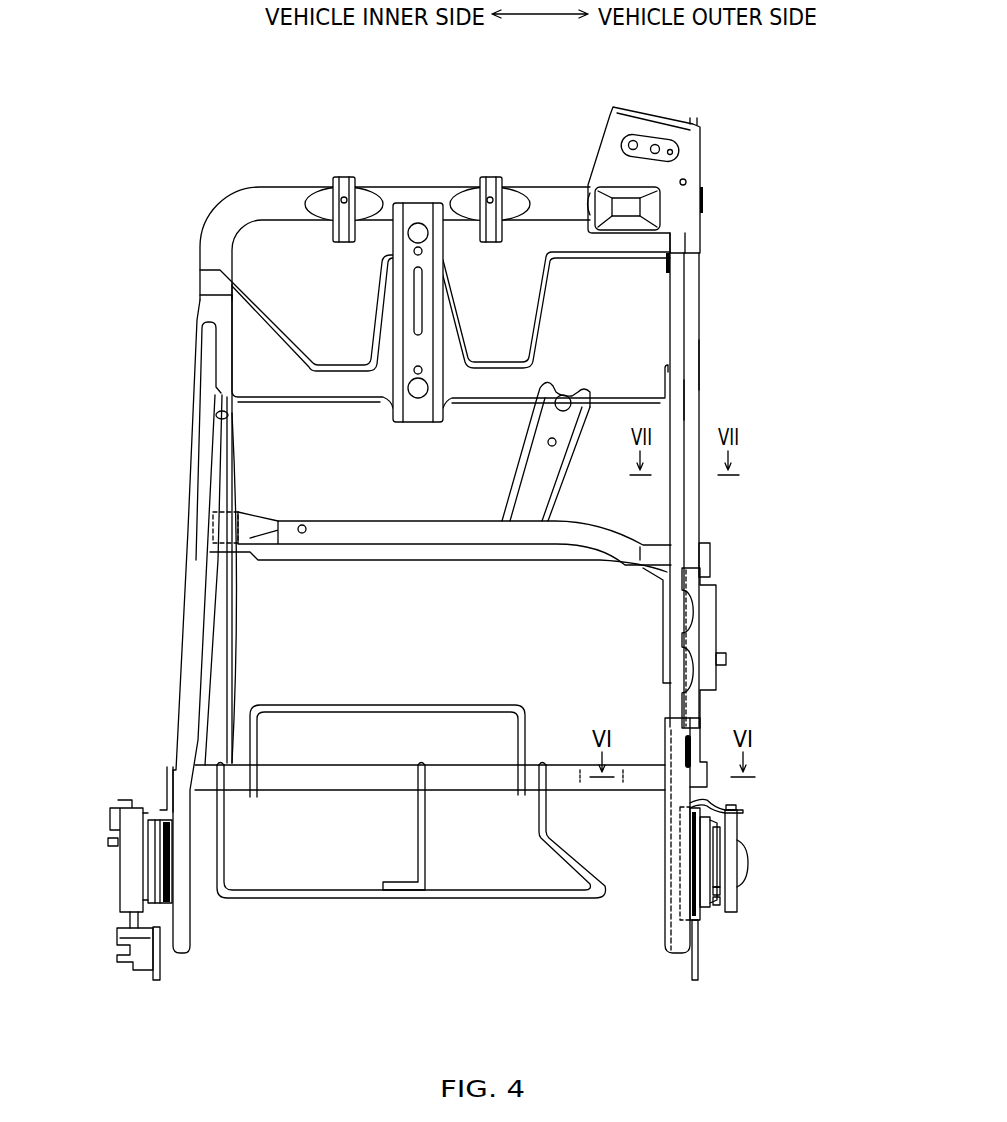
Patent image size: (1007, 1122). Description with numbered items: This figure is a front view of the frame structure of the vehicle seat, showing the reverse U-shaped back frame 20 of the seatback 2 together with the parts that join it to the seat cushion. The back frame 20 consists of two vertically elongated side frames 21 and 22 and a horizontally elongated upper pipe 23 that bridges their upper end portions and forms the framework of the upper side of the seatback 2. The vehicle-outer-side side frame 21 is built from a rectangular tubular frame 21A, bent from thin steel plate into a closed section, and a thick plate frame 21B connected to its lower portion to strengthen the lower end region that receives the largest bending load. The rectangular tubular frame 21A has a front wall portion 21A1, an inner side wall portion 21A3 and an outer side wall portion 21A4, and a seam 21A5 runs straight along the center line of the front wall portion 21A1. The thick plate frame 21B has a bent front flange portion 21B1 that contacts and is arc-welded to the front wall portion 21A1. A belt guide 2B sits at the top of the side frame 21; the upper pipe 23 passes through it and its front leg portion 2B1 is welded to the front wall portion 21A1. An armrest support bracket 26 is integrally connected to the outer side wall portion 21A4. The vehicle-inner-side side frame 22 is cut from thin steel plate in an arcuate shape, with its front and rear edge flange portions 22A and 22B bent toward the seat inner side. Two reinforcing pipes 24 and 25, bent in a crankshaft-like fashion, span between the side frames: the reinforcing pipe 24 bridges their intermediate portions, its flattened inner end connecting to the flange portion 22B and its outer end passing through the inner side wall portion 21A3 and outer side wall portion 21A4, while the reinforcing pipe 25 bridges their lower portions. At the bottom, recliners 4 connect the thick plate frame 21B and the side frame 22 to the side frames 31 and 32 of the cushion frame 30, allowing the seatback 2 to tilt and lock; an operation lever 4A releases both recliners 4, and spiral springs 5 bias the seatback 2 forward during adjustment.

The seatback 2 is at (355, 212).
The back frame 20 is at (202, 180).
The side frame 21 is at (707, 271).
The rectangular tubular frame 21A is at (721, 490).
The front wall portion 21A1 is at (690, 512).
The inner side wall portion 21A3 is at (672, 341).
The outer side wall portion 21A4 is at (700, 364).
The seam 21A5 is at (685, 401).
The thick plate frame 21B is at (638, 848).
The front flange portion 21B1 is at (677, 766).
The side frame 22 is at (176, 618).
The flange portion 22A is at (203, 444).
The flange portion 22B is at (228, 490).
The upper pipe 23 is at (417, 180).
The reinforcing pipe 24 is at (368, 528).
The reinforcing pipe 25 is at (360, 778).
The armrest support bracket 26 is at (716, 629).
The belt guide 2B is at (644, 115).
The front leg portion 2B1 is at (690, 234).
The recliner 4 is at (175, 850).
The operation lever 4A is at (722, 854).
The spiral spring 5 is at (123, 830).
The cushion frame 30 is at (474, 970).
The side frame 31 is at (700, 970).
The side frame 32 is at (160, 957).